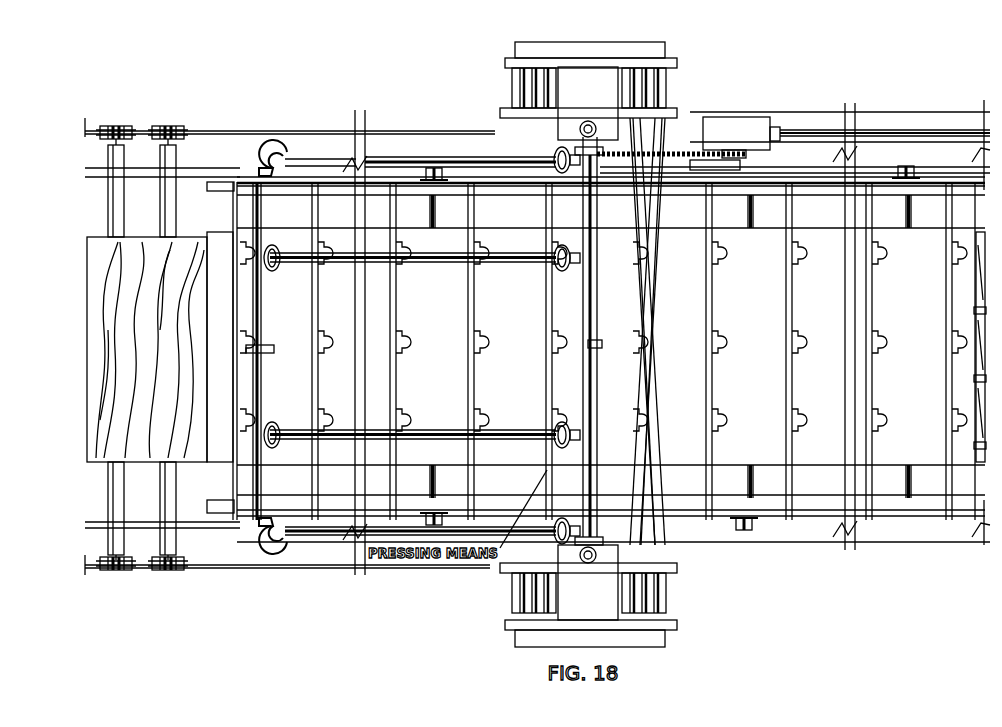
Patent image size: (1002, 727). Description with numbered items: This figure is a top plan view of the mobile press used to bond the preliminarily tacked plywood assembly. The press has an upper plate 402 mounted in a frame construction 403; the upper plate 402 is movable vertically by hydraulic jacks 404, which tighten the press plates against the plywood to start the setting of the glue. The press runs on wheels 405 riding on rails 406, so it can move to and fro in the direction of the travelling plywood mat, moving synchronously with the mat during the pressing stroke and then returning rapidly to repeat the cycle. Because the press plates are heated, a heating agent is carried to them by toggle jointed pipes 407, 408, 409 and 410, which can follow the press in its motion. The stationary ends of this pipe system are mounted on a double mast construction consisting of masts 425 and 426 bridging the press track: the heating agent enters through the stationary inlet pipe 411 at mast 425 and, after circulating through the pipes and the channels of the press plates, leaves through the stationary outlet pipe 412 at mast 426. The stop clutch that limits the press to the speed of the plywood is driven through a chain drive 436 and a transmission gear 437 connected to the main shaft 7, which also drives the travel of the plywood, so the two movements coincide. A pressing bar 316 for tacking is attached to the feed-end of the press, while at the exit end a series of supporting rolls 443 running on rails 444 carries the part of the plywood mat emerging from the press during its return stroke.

The main shaft 7 is at (910, 130).
The pressing bar 316 is at (980, 238).
The upper plate 402 is at (220, 240).
The frame construction 403 is at (335, 180).
The hydraulic jacks 404 is at (325, 345).
The wheels 405 is at (438, 168).
The rails 406 is at (232, 178).
The toggle jointed pipe 407 is at (405, 157).
The toggle jointed pipe 408 is at (316, 537).
The toggle jointed pipe 409 is at (455, 272).
The toggle jointed pipe 410 is at (420, 430).
The stationary inlet pipe 411 is at (588, 121).
The stationary outlet pipe 412 is at (588, 565).
The mast 425 is at (667, 100).
The mast 426 is at (667, 596).
The chain drive 436 is at (697, 152).
The transmission gear 437 is at (740, 135).
The supporting rolls 443 is at (170, 172).
The rails 444 is at (142, 132).